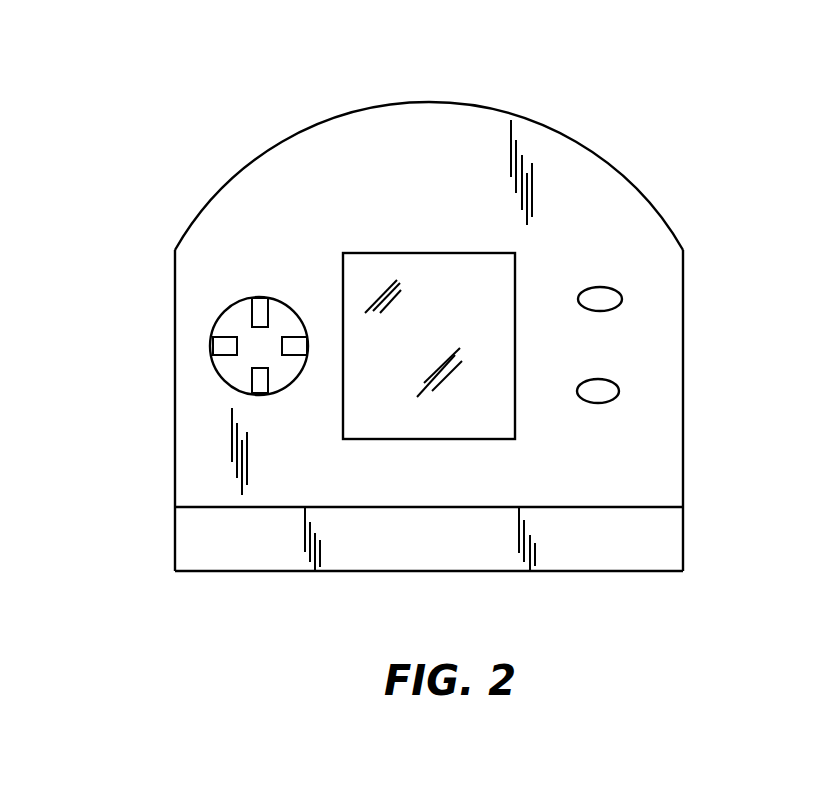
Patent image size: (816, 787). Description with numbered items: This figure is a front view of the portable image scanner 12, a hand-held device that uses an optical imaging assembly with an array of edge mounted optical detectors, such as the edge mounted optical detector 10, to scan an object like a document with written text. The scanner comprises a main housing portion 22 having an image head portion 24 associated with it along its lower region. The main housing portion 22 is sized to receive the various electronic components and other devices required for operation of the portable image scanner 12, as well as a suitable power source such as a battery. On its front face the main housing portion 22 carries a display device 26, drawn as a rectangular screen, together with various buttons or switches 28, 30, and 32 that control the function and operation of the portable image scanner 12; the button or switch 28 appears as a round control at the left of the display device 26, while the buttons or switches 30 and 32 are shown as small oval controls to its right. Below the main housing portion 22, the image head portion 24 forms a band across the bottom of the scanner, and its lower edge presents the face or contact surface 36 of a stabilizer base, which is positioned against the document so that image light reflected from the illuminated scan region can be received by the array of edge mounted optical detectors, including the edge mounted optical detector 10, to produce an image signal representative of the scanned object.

The edge mounted optical detector 10 is at (645, 546).
The portable image scanner 12 is at (411, 327).
The main housing portion 22 is at (430, 100).
The image head portion 24 is at (683, 538).
The display device 26 is at (427, 253).
The button or switch 28 is at (276, 298).
The button or switch 30 is at (597, 288).
The button or switch 32 is at (601, 403).
The contact surface 36 is at (202, 573).